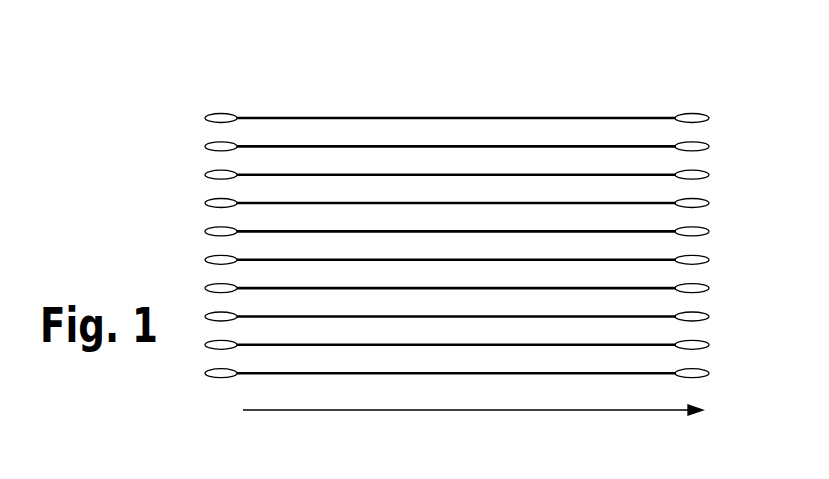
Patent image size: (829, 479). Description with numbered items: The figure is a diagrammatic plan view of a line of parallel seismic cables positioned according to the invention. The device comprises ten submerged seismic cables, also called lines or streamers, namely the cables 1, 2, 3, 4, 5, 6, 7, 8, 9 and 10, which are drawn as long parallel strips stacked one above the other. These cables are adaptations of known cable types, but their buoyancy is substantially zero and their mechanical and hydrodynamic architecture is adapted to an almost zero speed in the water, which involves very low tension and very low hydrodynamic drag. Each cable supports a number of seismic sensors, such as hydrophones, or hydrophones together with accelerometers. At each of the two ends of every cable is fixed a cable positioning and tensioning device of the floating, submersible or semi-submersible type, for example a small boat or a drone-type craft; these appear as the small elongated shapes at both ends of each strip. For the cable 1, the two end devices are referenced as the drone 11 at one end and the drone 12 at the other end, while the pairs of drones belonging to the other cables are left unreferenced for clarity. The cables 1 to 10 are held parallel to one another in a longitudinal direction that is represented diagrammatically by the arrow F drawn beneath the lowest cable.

The seismic cable 1 is at (620, 117).
The seismic cable 2 is at (587, 146).
The seismic cable 3 is at (547, 174).
The seismic cable 4 is at (522, 202).
The seismic cable 5 is at (493, 230).
The seismic cable 6 is at (550, 261).
The seismic cable 7 is at (483, 289).
The seismic cable 8 is at (438, 318).
The seismic cable 9 is at (407, 346).
The seismic cable 10 is at (350, 375).
The drone 11 is at (232, 114).
The drone 12 is at (693, 114).
The arrow F is at (423, 412).